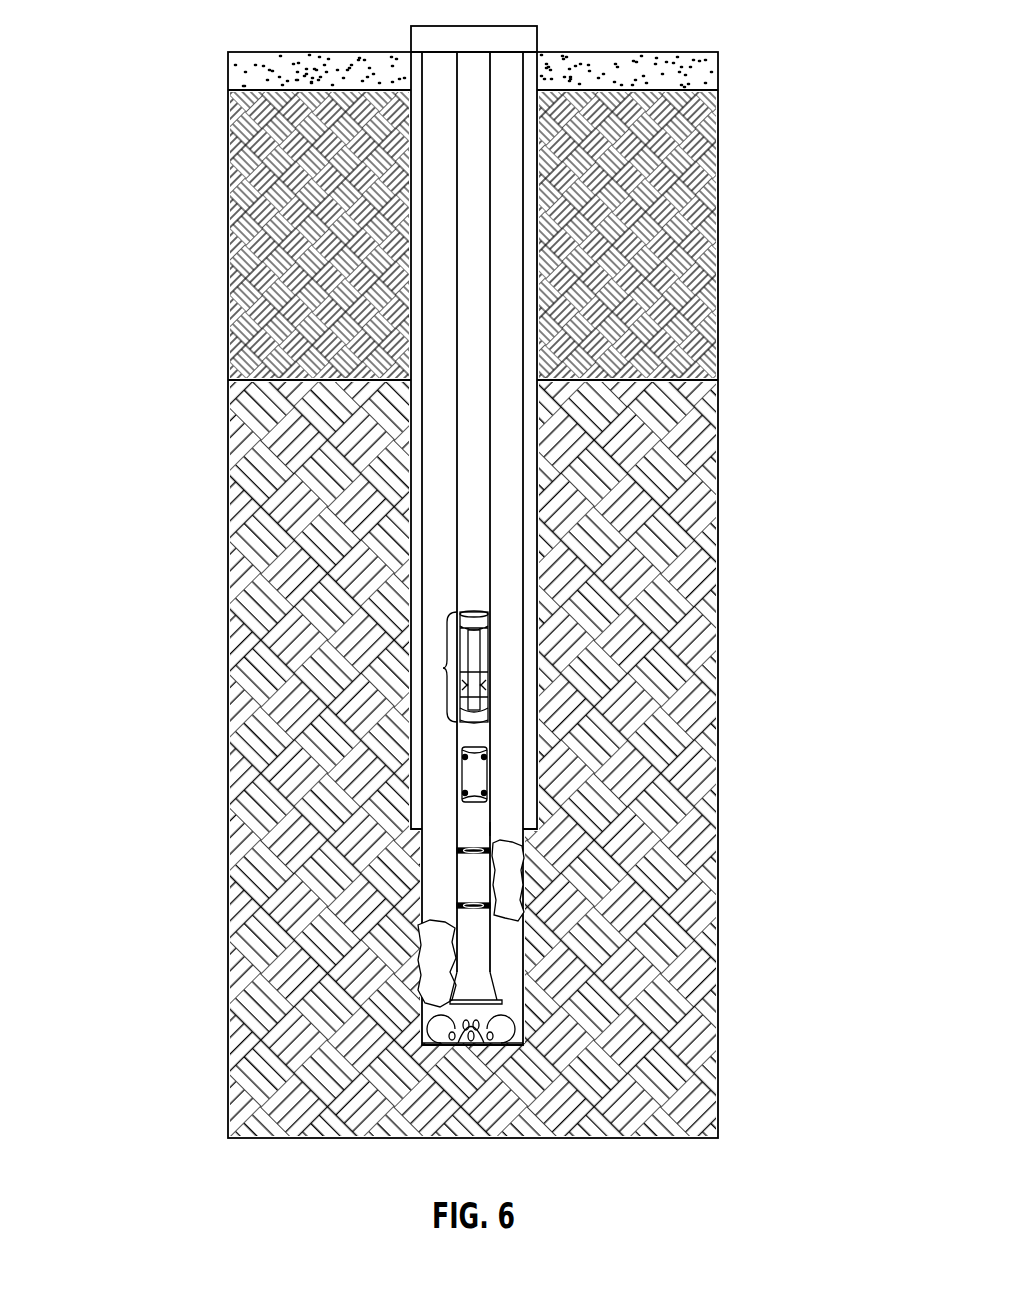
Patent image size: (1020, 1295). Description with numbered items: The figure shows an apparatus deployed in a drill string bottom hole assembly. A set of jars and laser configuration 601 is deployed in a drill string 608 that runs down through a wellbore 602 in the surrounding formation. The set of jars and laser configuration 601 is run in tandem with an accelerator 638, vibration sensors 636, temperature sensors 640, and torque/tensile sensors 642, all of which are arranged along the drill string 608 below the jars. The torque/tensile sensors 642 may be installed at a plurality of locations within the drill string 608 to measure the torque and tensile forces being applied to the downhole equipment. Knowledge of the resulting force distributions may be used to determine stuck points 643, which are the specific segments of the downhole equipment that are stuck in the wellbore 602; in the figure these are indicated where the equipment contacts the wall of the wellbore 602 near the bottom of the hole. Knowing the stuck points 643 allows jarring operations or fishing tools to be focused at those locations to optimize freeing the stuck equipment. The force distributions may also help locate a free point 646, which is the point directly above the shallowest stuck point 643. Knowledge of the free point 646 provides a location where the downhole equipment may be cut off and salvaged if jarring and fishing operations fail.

The drill string 608 is at (455, 498).
The set of jars and laser configuration 601 is at (443, 668).
The vibration sensors 636 is at (463, 757).
The accelerator 638 is at (468, 780).
The temperature sensors 640 is at (462, 793).
The torque/tensile sensors 642 is at (457, 918).
The free point 646 is at (492, 829).
The stuck points 643 is at (447, 963).
The wellbore 602 is at (507, 985).